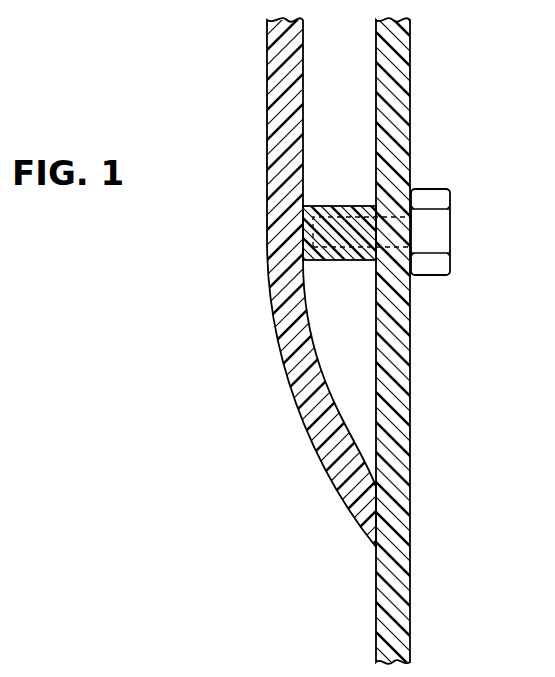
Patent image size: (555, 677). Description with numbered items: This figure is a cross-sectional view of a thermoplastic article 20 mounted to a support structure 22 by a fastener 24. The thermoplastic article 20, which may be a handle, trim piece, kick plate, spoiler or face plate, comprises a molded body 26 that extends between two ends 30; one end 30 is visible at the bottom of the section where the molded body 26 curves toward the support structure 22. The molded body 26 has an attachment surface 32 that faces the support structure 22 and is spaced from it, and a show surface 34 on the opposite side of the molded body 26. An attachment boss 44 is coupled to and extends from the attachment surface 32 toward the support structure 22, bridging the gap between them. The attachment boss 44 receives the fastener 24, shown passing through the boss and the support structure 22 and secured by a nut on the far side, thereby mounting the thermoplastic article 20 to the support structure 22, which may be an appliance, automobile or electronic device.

The thermoplastic article 20 is at (247, 133).
The support structure 22 is at (401, 102).
The fastener 24 is at (437, 232).
The molded body 26 is at (272, 100).
The end 30 is at (358, 548).
The attachment surface 32 is at (303, 60).
The show surface 34 is at (270, 178).
The attachment boss 44 is at (348, 260).